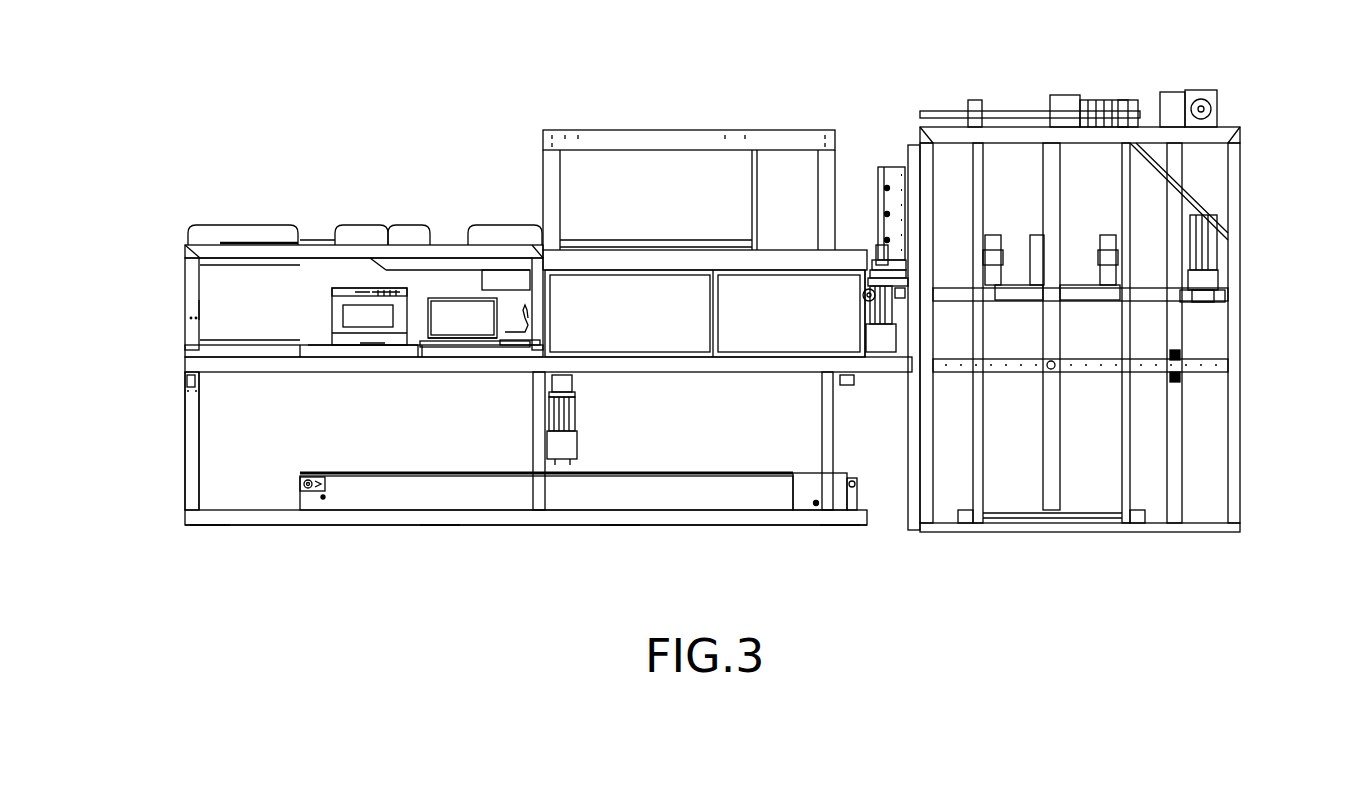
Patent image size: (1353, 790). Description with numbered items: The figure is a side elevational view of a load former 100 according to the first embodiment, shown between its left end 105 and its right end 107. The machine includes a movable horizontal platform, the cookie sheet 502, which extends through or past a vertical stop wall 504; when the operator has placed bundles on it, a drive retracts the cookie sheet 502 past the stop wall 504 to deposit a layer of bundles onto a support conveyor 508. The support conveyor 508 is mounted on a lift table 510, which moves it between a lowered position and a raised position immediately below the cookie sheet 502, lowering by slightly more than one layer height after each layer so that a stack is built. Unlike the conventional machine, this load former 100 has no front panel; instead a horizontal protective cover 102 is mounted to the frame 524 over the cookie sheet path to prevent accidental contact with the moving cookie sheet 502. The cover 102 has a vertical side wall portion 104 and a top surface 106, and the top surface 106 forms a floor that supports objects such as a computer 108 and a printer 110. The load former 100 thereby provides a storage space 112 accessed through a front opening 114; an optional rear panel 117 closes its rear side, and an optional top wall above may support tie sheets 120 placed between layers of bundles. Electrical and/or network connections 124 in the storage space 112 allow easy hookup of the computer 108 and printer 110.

The load former 100 is at (1274, 143).
The horizontal protective cover 102 is at (250, 330).
The vertical side wall portion 104 is at (308, 345).
The left end 105 is at (152, 432).
The top surface 106 is at (297, 345).
The right end 107 is at (858, 188).
The computer 108 is at (462, 322).
The printer 110 is at (370, 310).
The storage space 112 is at (247, 287).
The front opening 114 is at (198, 300).
The rear panel 117 is at (213, 278).
The tie sheets 120 is at (312, 240).
The electrical and/or network connections 124 is at (534, 318).
The cookie sheet 502 is at (640, 357).
The stop wall 504 is at (547, 307).
The support conveyor 508 is at (732, 470).
The lift table 510 is at (636, 492).
The frame 524 is at (185, 480).